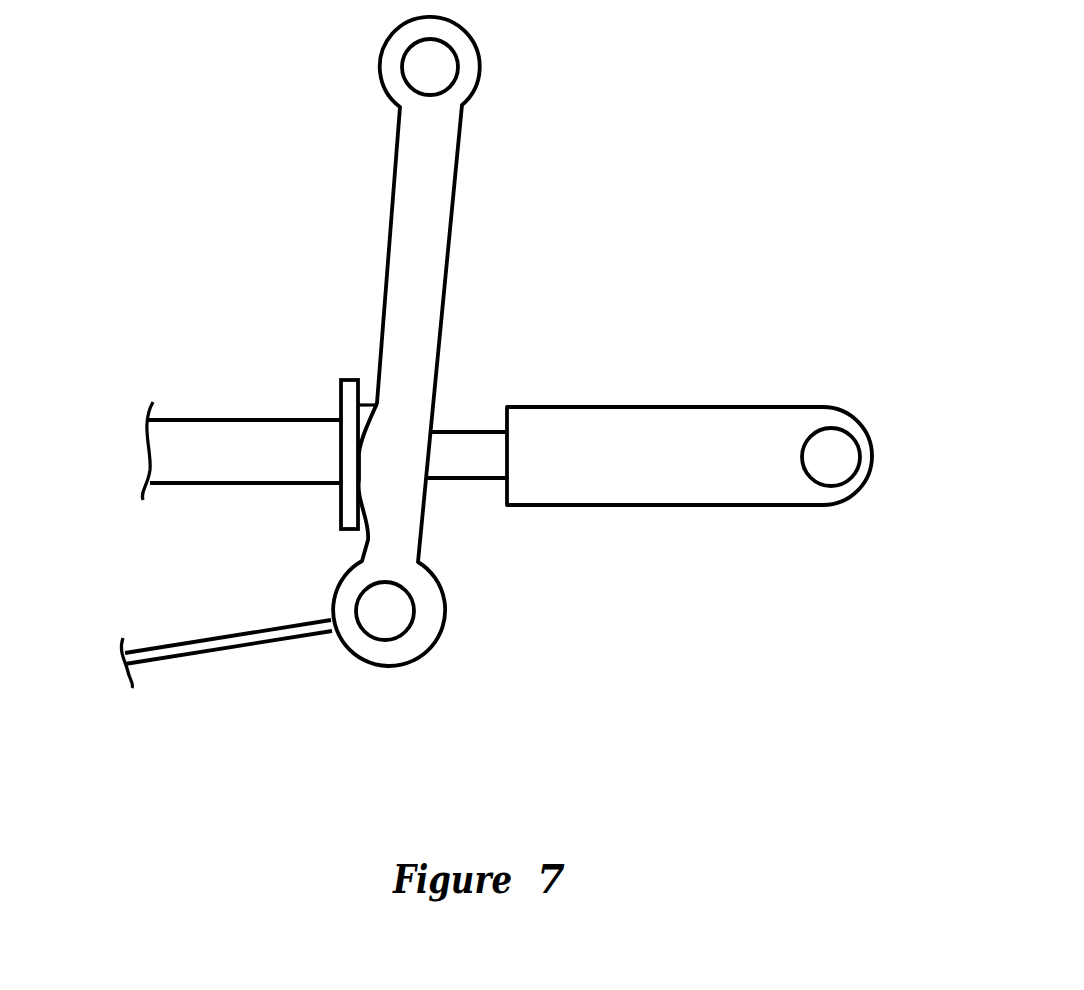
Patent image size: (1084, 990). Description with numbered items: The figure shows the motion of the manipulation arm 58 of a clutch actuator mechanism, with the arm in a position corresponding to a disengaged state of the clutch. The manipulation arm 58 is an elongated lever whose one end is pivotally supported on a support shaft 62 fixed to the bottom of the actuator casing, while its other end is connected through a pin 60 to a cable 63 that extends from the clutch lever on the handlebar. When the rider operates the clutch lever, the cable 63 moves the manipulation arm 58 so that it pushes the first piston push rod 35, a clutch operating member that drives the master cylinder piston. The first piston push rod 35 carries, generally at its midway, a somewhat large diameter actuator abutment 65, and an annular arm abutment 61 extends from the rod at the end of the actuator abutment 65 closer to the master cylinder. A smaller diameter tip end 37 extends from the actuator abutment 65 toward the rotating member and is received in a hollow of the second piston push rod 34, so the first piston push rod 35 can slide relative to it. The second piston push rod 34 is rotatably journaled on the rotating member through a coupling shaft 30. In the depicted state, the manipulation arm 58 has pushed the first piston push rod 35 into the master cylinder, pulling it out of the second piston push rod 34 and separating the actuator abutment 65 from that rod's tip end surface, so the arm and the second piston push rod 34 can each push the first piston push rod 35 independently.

The coupling shaft 30 is at (832, 442).
The second piston push rod 34 is at (667, 447).
The first piston push rod 35 is at (197, 442).
The tip end 37 is at (477, 468).
The manipulation arm 58 is at (432, 270).
The pin 60 is at (393, 628).
The arm abutment 61 is at (347, 503).
The support shaft 62 is at (456, 68).
The cable 63 is at (253, 643).
The actuator abutment 65 is at (376, 402).